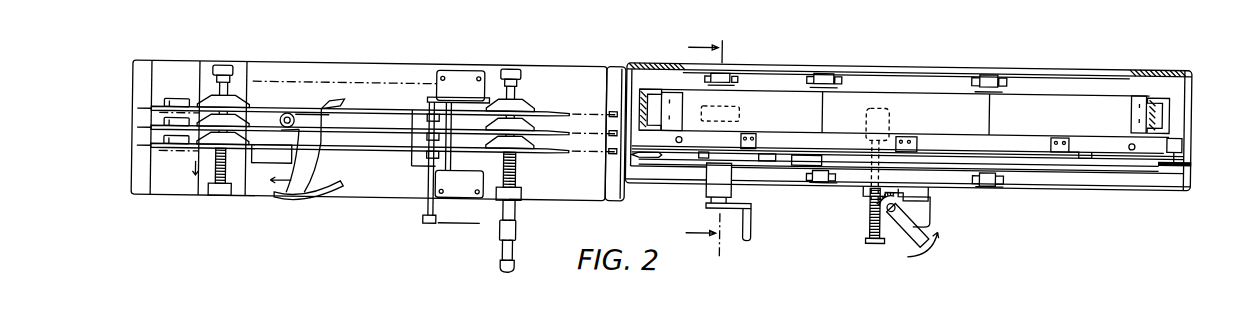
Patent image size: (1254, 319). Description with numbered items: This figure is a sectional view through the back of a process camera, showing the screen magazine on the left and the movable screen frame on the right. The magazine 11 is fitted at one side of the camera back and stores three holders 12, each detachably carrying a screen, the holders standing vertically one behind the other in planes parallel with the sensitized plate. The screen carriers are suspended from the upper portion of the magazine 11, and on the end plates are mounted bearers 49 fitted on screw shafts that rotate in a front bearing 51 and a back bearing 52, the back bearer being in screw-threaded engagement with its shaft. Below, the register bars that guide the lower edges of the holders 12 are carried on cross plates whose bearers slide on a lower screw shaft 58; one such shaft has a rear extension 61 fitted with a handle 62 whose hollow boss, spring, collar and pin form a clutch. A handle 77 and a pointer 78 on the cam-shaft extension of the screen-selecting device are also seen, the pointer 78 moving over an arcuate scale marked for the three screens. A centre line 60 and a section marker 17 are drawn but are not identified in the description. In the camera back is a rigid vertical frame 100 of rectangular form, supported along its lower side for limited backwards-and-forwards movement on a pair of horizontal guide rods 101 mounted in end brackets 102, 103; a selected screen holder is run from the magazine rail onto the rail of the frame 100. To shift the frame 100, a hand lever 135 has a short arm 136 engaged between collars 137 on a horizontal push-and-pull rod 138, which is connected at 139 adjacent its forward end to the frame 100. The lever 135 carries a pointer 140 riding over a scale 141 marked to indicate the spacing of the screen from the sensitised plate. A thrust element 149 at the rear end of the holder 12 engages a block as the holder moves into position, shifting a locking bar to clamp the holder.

The magazine 11 is at (132, 160).
The holders 12 is at (391, 124).
The section line 17 is at (694, 147).
The bearers 49 is at (523, 164).
The front bearing 51 is at (220, 62).
The back bearing 52 is at (222, 188).
The shaft 58 is at (215, 157).
The center line 60 is at (373, 79).
The rear extension 61 is at (515, 202).
The handle 62 is at (503, 260).
The handle 77 is at (463, 219).
The pointer 78 is at (412, 196).
The rigid vertical frame 100 is at (1167, 112).
The horizontal guide rods 101 is at (1038, 177).
The end bracket 102 is at (817, 65).
The end bracket 103 is at (828, 167).
The hand lever 135 is at (923, 239).
The short arm 136 is at (892, 222).
The collars 137 is at (872, 195).
The push-and-pull rod 138 is at (882, 233).
The connection 139 is at (890, 109).
The pointer 140 is at (900, 189).
The scale 141 is at (907, 186).
The thrust element 149 is at (163, 102).